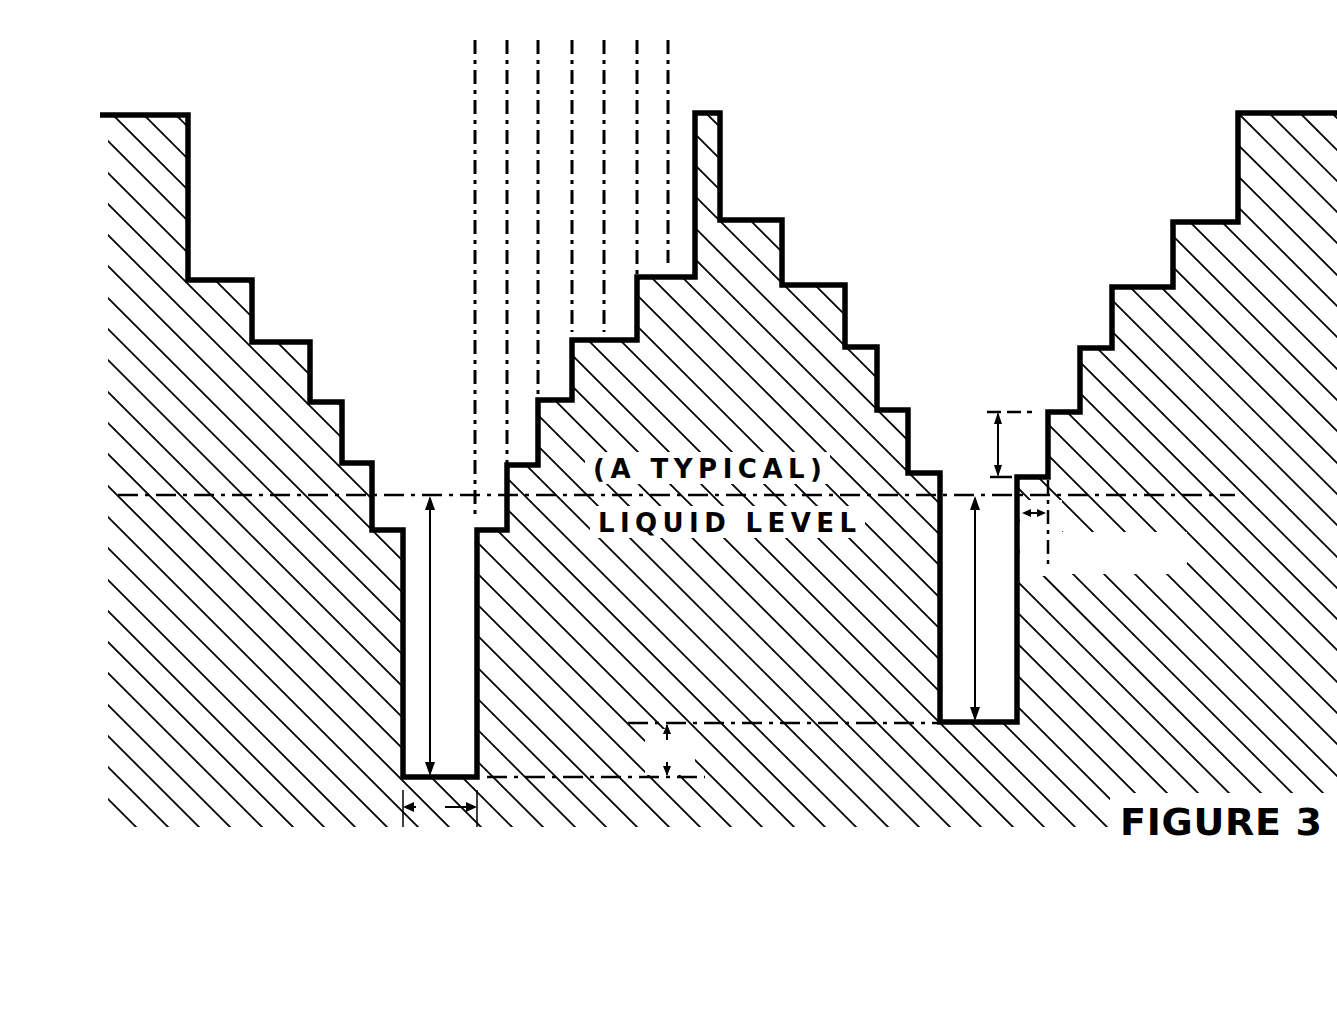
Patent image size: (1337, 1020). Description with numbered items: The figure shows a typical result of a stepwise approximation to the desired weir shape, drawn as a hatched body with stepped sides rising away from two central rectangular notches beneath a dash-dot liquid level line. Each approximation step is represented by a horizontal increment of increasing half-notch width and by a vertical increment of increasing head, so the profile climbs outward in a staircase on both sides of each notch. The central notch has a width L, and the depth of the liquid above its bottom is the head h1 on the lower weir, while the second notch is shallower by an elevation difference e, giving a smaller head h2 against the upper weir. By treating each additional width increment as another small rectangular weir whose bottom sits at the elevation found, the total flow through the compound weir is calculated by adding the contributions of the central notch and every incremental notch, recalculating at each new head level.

The head on the first weir h1 is at (441, 636).
The head on the second weir h2 is at (985, 608).
The width of the central notch L is at (440, 810).
The elevation difference between weir bottoms e is at (667, 750).